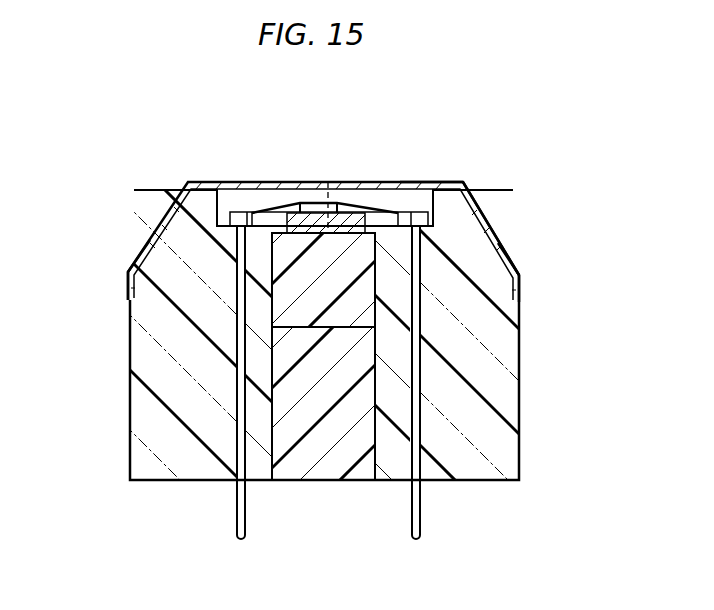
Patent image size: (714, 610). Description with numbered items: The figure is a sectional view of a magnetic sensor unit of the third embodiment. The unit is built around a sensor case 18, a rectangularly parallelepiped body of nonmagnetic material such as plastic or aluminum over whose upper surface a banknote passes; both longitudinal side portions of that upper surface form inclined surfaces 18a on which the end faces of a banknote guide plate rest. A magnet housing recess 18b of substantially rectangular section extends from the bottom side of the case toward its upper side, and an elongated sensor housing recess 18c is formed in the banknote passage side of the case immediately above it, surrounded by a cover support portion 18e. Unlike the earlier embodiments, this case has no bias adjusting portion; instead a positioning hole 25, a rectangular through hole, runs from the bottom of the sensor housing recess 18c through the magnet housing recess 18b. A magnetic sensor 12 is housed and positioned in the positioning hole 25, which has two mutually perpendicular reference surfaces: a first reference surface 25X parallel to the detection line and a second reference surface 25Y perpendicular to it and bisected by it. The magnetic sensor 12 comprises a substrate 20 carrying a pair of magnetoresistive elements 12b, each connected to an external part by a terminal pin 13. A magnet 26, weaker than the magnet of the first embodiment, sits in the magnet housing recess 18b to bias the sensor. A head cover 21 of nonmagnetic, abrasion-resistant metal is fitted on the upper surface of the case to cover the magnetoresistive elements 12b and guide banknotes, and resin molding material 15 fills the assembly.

The magnetic sensor 12 is at (276, 184).
The magnetoresistive element 12b is at (300, 205).
The terminal pin 13 is at (233, 537).
The resin molding material 15 is at (355, 435).
The sensor case 18 is at (138, 448).
The inclined surface 18a is at (153, 242).
The magnet housing recess 18b is at (275, 443).
The sensor housing recess 18c is at (432, 187).
The cover support portion 18e is at (200, 182).
The substrate 20 is at (252, 212).
The head cover 21 is at (483, 223).
The positioning hole 25 is at (365, 212).
The first reference surface 25X is at (305, 235).
The second reference surface 25Y is at (328, 182).
The magnet 26 is at (318, 305).